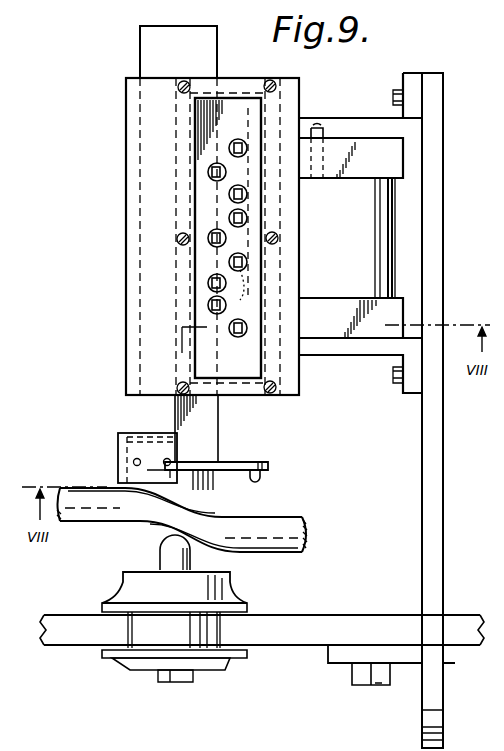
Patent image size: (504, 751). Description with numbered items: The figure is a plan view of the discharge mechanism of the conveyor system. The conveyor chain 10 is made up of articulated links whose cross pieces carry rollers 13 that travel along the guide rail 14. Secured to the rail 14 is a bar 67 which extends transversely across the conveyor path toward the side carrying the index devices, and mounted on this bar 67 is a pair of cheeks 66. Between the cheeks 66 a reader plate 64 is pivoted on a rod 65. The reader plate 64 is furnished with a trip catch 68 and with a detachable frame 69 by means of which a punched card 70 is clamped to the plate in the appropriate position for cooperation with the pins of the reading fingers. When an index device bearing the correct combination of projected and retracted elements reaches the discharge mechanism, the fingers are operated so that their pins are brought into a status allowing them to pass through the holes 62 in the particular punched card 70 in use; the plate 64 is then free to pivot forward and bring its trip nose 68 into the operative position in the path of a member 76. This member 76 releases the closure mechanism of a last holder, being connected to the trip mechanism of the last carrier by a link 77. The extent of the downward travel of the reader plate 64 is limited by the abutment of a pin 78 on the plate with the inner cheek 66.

The conveyor chain 10 is at (284, 553).
The rollers 13 is at (250, 606).
The guide rail 14 is at (293, 646).
The holes 62 is at (210, 171).
The reader plate 64 is at (291, 388).
The rod 65 is at (374, 241).
The cheeks 66 is at (348, 119).
The bar 67 is at (430, 492).
The trip catch 68 is at (118, 459).
The detachable frame 69 is at (248, 393).
The punched card 70 is at (240, 100).
The member 76 is at (242, 463).
The link 77 is at (262, 480).
The pin 78 is at (316, 183).